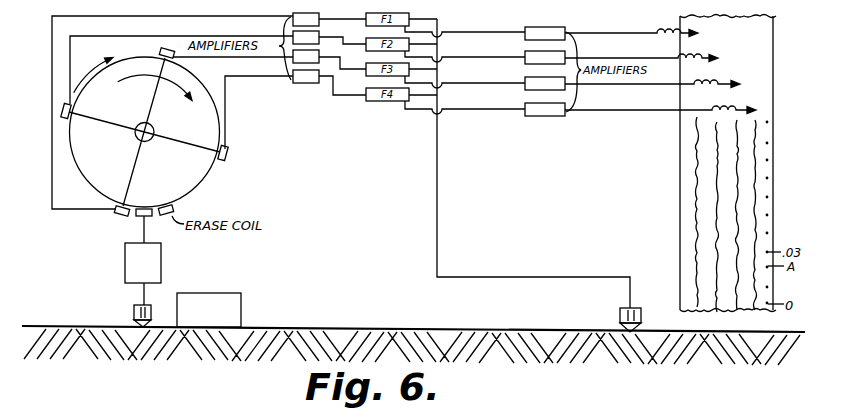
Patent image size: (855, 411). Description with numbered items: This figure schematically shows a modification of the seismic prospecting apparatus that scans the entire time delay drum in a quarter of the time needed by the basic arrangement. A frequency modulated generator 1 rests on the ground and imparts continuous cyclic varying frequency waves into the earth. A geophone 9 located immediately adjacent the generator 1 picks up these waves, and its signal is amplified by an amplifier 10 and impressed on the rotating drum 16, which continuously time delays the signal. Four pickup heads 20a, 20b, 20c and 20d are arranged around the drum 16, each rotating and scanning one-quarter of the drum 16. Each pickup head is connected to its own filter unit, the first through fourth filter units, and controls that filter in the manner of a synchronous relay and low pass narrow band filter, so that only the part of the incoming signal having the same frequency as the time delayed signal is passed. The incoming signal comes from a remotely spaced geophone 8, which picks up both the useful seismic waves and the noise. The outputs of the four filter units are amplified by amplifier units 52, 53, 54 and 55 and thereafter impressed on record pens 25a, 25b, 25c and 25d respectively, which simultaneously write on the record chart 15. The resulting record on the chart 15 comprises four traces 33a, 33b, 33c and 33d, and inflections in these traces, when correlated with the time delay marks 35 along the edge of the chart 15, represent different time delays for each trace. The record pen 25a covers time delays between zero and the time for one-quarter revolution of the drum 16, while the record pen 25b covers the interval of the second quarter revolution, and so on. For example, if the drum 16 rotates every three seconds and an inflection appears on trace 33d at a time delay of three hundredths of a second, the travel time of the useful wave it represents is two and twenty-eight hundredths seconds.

The frequency modulated generator 1 is at (241, 296).
The geophone 8 is at (620, 314).
The geophone 9 is at (133, 309).
The amplifier 10 is at (125, 265).
The record chart 15 is at (775, 42).
The drum 16 is at (198, 180).
The pickup head 20a is at (117, 214).
The pickup head 20b is at (62, 116).
The pickup head 20c is at (162, 50).
The pickup head 20d is at (232, 155).
The record pen 25a is at (672, 31).
The record pen 25b is at (700, 57).
The record pen 25c is at (724, 83).
The record pen 25d is at (722, 109).
The trace 33a is at (697, 137).
The trace 33b is at (716, 190).
The trace 33c is at (737, 178).
The trace 33d is at (756, 212).
The time delay marks 35 is at (768, 142).
The amplifier unit 52 is at (528, 28).
The amplifier unit 53 is at (528, 52).
The amplifier unit 54 is at (528, 78).
The amplifier unit 55 is at (528, 104).